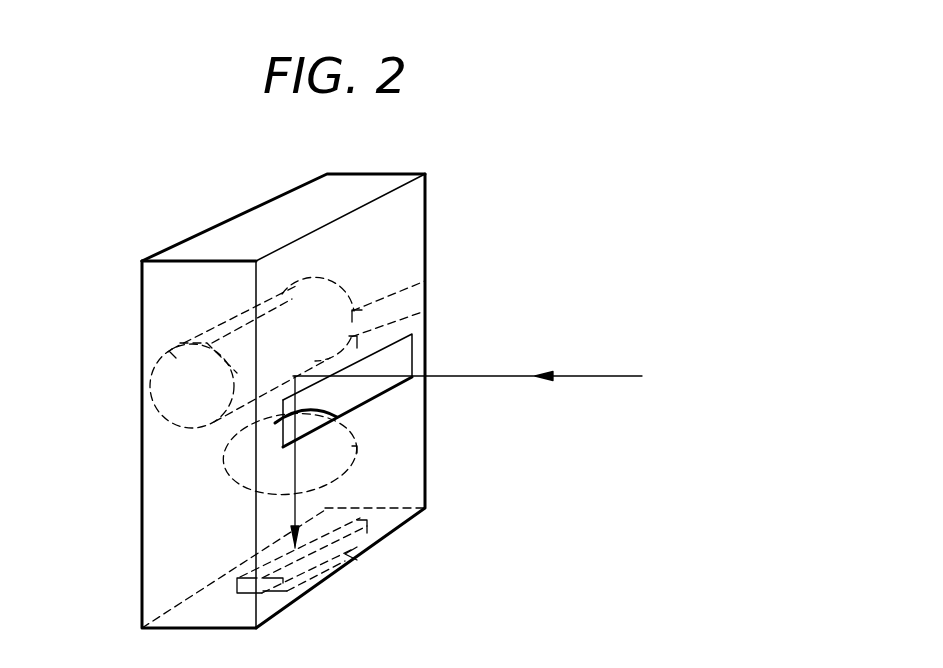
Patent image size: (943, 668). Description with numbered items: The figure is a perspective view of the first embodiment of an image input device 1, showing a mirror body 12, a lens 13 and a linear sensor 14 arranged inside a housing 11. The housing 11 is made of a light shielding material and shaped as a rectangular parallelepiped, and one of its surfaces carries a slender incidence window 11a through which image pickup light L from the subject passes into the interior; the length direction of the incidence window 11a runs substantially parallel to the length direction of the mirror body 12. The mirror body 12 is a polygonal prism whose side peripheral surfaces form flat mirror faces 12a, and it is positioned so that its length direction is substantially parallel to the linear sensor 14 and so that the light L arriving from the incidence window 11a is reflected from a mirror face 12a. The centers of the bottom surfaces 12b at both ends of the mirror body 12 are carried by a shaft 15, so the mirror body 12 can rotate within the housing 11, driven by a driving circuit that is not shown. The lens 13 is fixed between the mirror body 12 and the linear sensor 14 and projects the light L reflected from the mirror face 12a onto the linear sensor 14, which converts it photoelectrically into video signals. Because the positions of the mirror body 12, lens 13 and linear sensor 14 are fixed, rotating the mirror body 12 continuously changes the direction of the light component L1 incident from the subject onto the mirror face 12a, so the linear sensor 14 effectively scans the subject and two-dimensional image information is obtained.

The image input device 1 is at (440, 169).
The housing 11 is at (427, 202).
The incidence window 11a is at (362, 400).
The mirror body 12 is at (425, 280).
The mirror face 12a is at (425, 310).
The bottom surface 12b is at (165, 348).
The lens 13 is at (350, 443).
The linear sensor 14 is at (353, 550).
The shaft 15 is at (192, 386).
The image pickup light L is at (576, 377).
The light component L1 is at (450, 376).